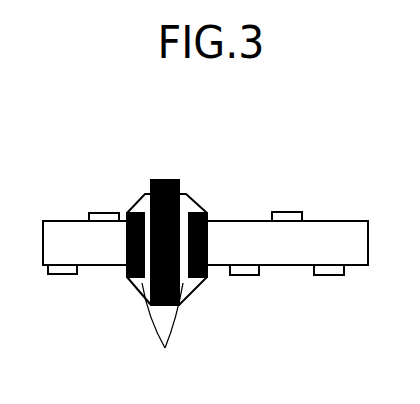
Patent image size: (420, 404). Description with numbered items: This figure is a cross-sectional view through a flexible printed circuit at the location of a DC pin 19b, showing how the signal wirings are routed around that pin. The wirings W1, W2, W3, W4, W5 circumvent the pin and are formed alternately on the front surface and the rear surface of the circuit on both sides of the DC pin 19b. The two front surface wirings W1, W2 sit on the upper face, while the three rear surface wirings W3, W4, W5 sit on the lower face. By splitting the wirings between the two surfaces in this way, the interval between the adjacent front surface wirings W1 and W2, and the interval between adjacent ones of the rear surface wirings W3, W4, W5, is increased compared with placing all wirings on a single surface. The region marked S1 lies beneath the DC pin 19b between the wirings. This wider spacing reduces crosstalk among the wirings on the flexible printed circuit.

The DC pin 19b is at (165, 180).
The front surface wiring W1 is at (285, 212).
The front surface wiring W2 is at (106, 213).
The rear surface wiring W3 is at (329, 275).
The rear surface wiring W4 is at (245, 275).
The rear surface wiring W5 is at (62, 275).
The switch / gap S1 is at (162, 333).